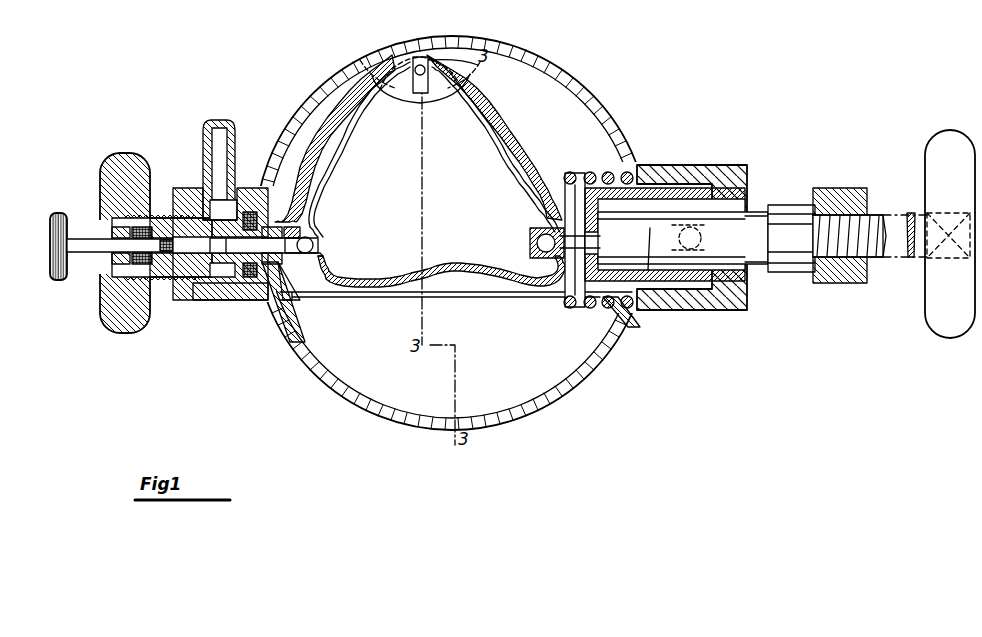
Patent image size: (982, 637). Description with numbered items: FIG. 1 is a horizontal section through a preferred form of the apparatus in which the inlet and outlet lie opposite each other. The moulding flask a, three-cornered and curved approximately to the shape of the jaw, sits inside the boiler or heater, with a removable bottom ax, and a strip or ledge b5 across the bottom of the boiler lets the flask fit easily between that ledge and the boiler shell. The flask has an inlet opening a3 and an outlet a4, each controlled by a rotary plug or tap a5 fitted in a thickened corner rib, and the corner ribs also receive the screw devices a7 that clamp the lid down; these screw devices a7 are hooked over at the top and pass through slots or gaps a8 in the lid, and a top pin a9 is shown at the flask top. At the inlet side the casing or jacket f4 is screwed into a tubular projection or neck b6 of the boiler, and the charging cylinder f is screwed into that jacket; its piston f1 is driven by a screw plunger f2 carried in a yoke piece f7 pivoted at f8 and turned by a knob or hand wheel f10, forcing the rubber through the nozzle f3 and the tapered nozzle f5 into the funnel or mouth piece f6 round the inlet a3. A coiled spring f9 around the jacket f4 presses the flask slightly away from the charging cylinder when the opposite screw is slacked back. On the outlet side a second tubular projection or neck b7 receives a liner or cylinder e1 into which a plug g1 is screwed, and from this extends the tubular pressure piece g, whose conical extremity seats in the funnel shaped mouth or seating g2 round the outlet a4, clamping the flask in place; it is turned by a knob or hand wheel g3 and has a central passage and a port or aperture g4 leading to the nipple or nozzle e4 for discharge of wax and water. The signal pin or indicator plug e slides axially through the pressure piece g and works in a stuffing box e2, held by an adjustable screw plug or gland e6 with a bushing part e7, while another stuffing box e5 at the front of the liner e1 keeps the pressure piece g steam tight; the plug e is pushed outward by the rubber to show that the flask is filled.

The moulding flask a is at (325, 150).
The removable bottom ax is at (460, 169).
The inlet opening a3 is at (532, 241).
The outlet a4 is at (312, 248).
The rotary plug or tap a5 is at (306, 235).
The screw devices a7 is at (447, 75).
The slots or gaps a8 is at (372, 80).
The top pin a9 is at (430, 62).
The strip or ledge b5 is at (392, 297).
The tubular projection or neck b6 is at (680, 310).
The tubular projection or neck b7 is at (245, 300).
The signal pin or indicator plug e is at (78, 252).
The liner or cylinder e1 is at (205, 290).
The stuffing box e2 is at (140, 265).
The nipple or nozzle e4 is at (210, 118).
The stuffing box e5 is at (272, 168).
The adjustable screw plug or gland e6 is at (112, 232).
The bushing part e7 is at (240, 165).
The charging cylinder f is at (745, 239).
The piston f1 is at (790, 272).
The screw plunger f2 is at (900, 215).
The nozzle f3 is at (605, 244).
The casing or jacket f4 is at (651, 249).
The nozzle f5 is at (632, 248).
The funnel or mouth piece f6 is at (548, 200).
The yoke piece f7 is at (815, 195).
The pivot f8 is at (692, 242).
The coiled spring f9 is at (608, 172).
The knob or hand wheel f10 is at (930, 153).
The tubular pressure piece g is at (261, 242).
The plug g1 is at (160, 218).
The funnel shaped mouth or seating g2 is at (300, 224).
The knob or hand wheel g3 is at (108, 330).
The port or aperture g4 is at (246, 245).